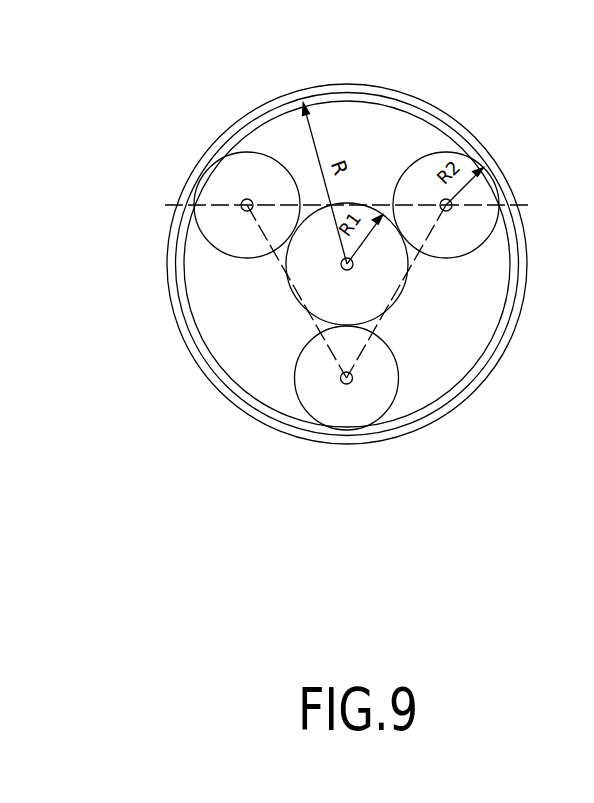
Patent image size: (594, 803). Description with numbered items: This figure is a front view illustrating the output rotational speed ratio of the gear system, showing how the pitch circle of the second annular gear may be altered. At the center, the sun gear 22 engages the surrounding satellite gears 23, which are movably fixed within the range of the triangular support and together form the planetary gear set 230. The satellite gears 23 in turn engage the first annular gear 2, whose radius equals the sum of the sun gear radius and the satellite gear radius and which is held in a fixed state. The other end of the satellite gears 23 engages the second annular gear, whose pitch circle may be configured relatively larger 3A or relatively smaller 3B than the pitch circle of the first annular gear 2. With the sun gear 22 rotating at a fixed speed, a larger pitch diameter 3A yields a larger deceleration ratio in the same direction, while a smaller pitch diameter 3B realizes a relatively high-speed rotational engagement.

The first annular gear 2 is at (186, 207).
The relatively larger pitch circle of the second annular gear 3A is at (228, 128).
The relatively smaller pitch circle of the second annular gear 3B is at (275, 122).
The sun gear 22 is at (367, 272).
The satellite gears 23 is at (240, 222).
The planetary gear set 230 is at (363, 352).